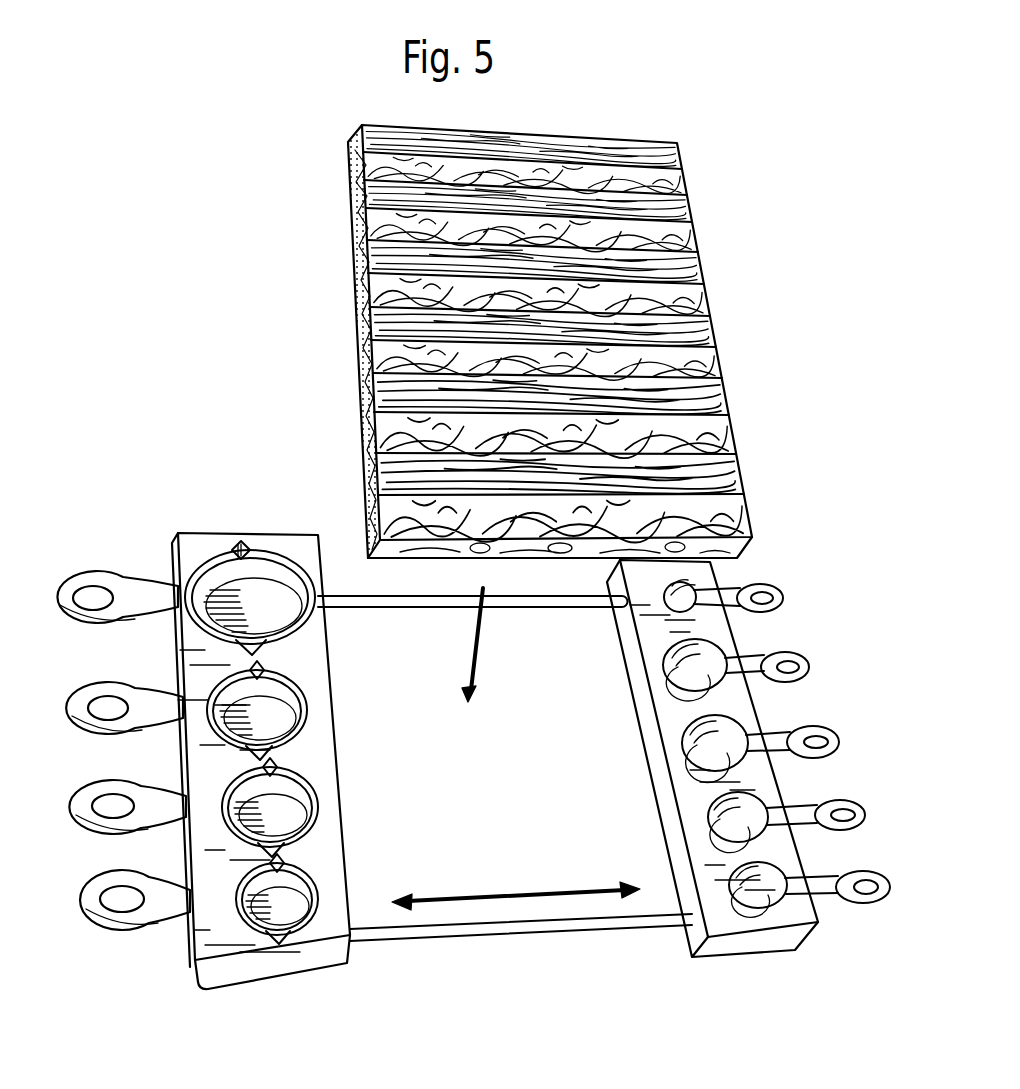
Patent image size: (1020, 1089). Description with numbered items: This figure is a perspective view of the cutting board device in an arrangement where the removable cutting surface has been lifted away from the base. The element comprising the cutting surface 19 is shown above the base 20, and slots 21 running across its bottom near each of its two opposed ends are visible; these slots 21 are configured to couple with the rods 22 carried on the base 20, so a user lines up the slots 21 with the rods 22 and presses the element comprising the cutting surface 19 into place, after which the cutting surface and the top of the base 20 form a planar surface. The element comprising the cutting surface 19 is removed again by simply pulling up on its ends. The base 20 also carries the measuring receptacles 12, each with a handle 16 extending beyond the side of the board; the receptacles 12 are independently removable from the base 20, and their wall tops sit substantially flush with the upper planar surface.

The measuring receptacles 12 is at (298, 927).
The handle 16 is at (162, 913).
The element comprising a cutting surface 19 is at (362, 380).
The base 20 is at (767, 942).
The slots 21 is at (350, 197).
The rods 22 is at (532, 602).